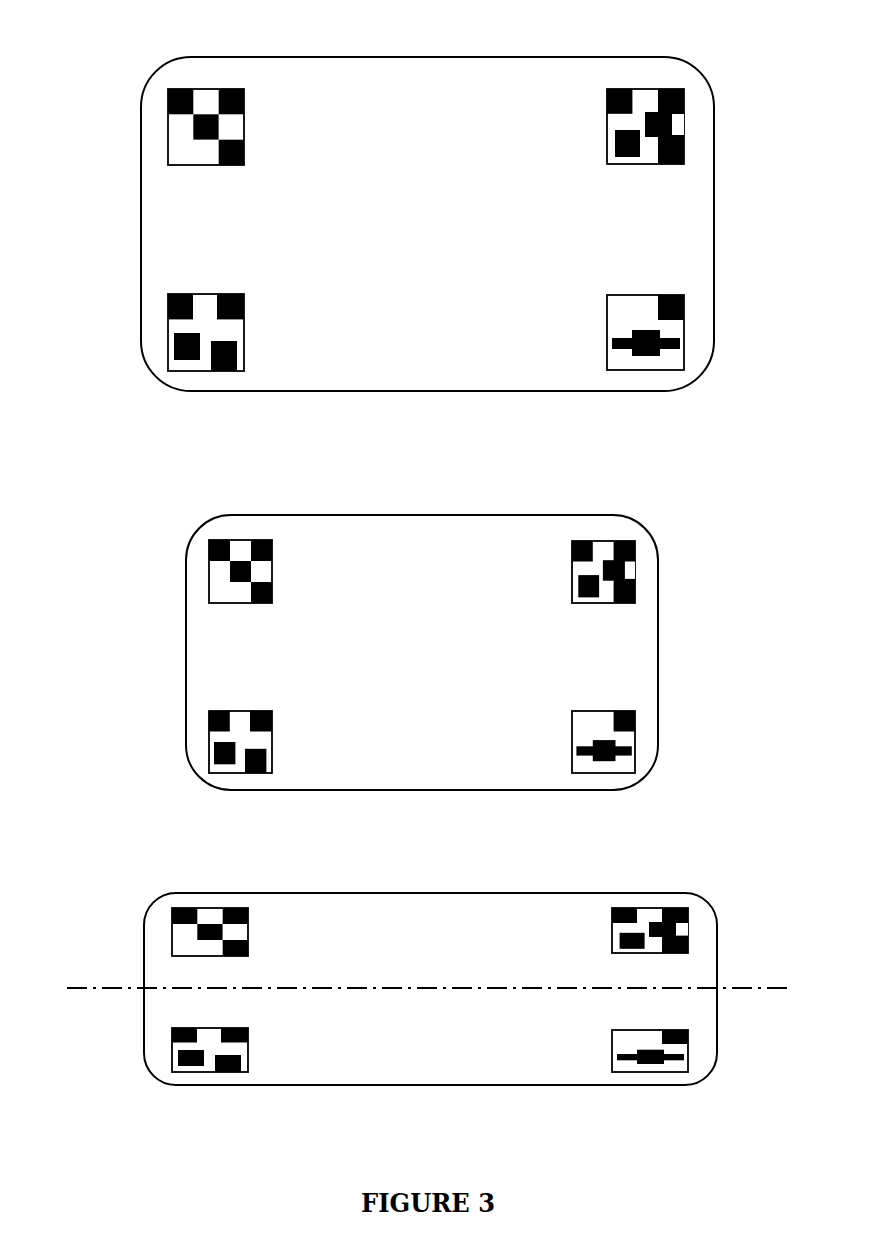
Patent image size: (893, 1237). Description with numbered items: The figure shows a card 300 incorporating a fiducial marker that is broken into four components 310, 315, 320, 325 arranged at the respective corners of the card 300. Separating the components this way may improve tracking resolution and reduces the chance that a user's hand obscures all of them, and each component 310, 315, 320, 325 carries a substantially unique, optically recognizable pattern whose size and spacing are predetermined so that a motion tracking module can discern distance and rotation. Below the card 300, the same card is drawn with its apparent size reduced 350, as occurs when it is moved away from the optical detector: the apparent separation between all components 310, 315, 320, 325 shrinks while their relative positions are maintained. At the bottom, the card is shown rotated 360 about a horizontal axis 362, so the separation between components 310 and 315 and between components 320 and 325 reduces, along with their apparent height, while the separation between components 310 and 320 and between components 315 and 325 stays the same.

The card 300 is at (379, 51).
The fiducial marker component 310 is at (162, 134).
The fiducial marker component 315 is at (162, 330).
The fiducial marker component 320 is at (692, 132).
The fiducial marker component 325 is at (692, 332).
The reduced apparent size 350 is at (394, 508).
The rotated card 360 is at (418, 891).
The axis 362 is at (127, 987).